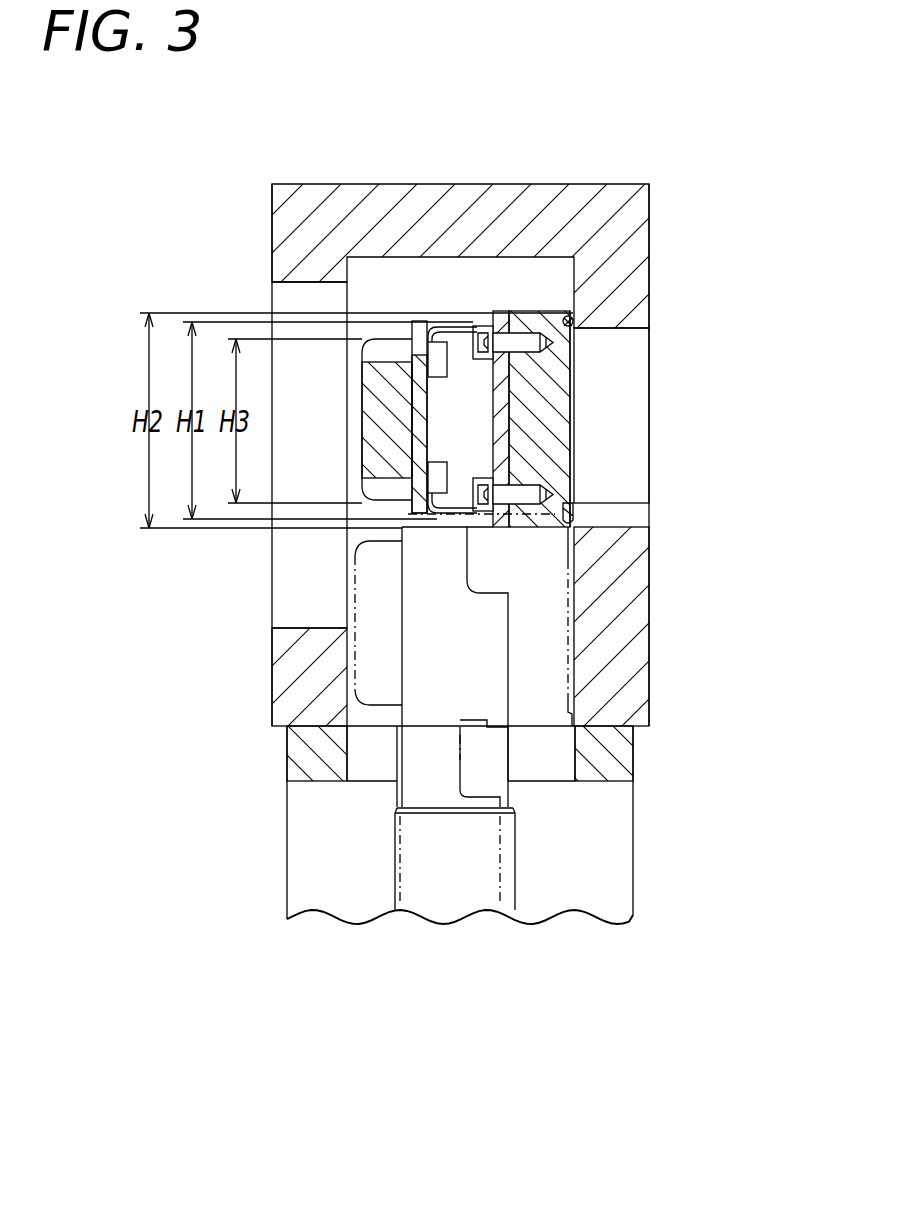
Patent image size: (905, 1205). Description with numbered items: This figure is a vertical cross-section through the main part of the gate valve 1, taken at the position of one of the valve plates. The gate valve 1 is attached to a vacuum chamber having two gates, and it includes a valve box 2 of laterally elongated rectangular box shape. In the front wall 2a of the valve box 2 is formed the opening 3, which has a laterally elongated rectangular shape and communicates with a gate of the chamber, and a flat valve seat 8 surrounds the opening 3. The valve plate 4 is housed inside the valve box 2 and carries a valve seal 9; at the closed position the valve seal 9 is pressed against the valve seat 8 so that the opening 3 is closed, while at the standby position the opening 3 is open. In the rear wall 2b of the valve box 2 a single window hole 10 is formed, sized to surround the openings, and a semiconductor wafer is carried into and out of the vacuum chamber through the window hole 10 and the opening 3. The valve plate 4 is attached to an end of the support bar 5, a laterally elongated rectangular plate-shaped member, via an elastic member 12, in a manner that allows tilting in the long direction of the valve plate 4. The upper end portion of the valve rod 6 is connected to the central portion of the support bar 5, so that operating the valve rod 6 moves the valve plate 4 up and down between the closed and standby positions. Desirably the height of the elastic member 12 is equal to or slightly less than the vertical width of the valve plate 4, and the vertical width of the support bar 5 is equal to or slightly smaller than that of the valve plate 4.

The gate valve 1 is at (317, 91).
The valve box 2 is at (457, 205).
The front wall 2a is at (649, 233).
The rear wall 2b is at (272, 226).
The opening 3 is at (630, 364).
The valve plate 4 is at (545, 413).
The support bar 5 is at (382, 425).
The valve rod 6 is at (442, 900).
The valve seat 8 is at (573, 507).
The valve seal 9 is at (573, 323).
The window hole 10 is at (298, 615).
The elastic member 12 is at (420, 455).